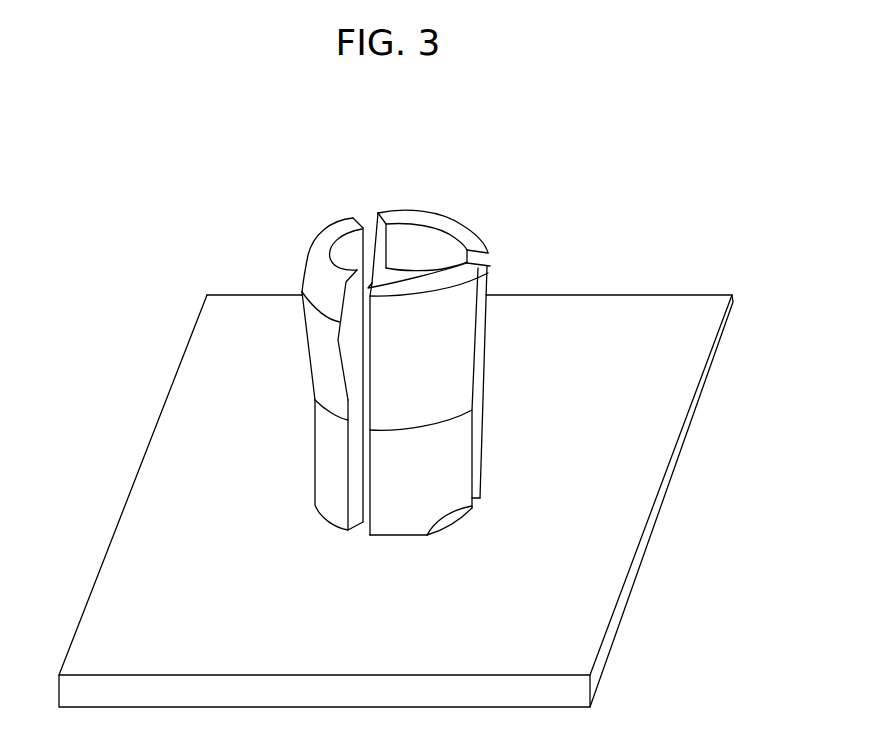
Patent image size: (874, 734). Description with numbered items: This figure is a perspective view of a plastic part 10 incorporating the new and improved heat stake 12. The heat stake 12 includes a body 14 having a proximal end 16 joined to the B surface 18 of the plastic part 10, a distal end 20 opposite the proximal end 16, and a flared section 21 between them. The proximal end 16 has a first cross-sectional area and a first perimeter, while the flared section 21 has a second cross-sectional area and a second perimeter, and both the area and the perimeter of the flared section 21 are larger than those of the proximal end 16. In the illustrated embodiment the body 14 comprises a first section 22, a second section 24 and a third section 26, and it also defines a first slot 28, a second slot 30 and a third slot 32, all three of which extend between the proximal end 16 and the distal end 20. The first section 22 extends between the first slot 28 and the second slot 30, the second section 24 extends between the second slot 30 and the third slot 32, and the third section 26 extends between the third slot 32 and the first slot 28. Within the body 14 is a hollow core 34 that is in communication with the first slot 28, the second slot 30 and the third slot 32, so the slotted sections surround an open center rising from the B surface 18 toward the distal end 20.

The plastic part 10 is at (563, 216).
The heat stake 12 is at (287, 462).
The body 14 is at (542, 410).
The proximal end 16 is at (468, 508).
The B surface 18 is at (585, 578).
The distal end 20 is at (315, 240).
The flared section 21 is at (318, 337).
The first section 22 is at (330, 447).
The second section 24 is at (442, 372).
The third section 26 is at (442, 228).
The first slot 28 is at (368, 222).
The second slot 30 is at (352, 366).
The third slot 32 is at (486, 262).
The hollow core 34 is at (410, 262).